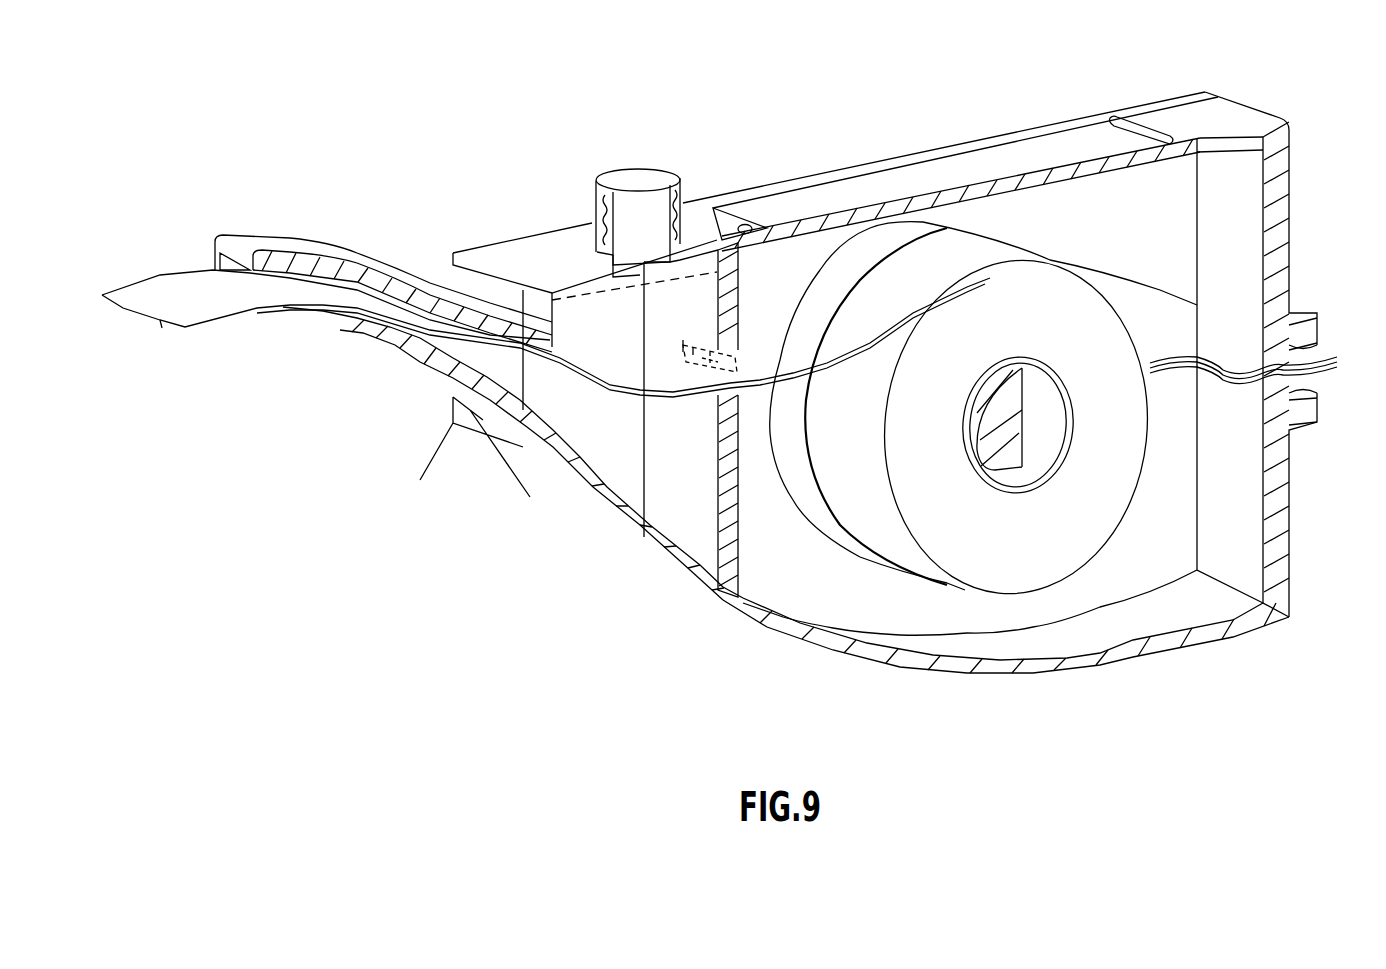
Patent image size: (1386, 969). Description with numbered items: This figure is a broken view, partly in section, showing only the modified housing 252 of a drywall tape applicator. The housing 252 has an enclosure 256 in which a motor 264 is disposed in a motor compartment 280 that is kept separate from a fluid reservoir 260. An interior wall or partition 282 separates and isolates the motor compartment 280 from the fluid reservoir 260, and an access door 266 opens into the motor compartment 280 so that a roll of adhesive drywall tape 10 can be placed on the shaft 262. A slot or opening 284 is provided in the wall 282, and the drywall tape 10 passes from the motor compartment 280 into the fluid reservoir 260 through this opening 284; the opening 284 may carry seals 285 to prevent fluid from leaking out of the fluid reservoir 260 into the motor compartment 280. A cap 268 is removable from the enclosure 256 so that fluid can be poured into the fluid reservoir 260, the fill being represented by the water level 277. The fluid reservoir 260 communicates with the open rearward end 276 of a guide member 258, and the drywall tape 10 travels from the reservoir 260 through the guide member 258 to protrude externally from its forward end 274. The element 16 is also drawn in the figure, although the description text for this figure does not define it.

The adhesive drywall tape 10 is at (1140, 320).
The tape 16 is at (143, 322).
The housing 252 is at (996, 97).
The enclosure 256 is at (1280, 507).
The guide member 258 is at (315, 245).
The fluid reservoir 260 is at (583, 460).
The shaft 262 is at (1015, 455).
The motor 264 is at (795, 510).
The access door 266 is at (921, 178).
The cap 268 is at (628, 174).
The forward end 274 is at (218, 265).
The open rearward end 276 is at (490, 424).
The water level 277 is at (694, 265).
The motor compartment 280 is at (1165, 555).
The interior wall or partition 282 is at (733, 290).
The slot or opening 284 is at (675, 338).
The seals 285 is at (745, 372).